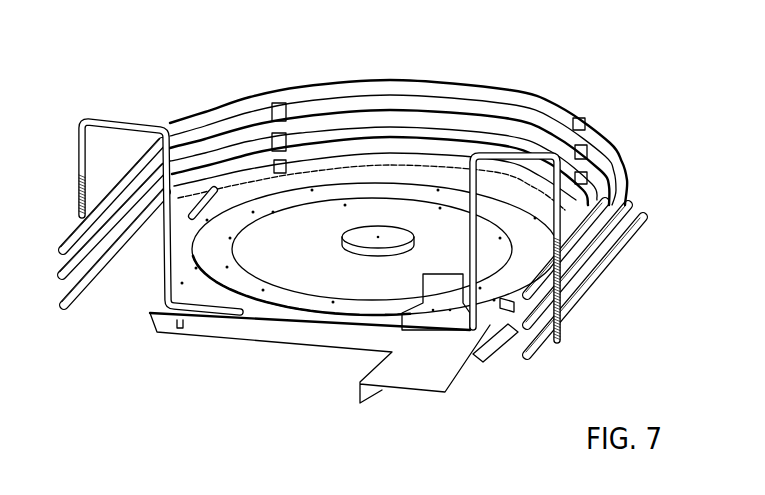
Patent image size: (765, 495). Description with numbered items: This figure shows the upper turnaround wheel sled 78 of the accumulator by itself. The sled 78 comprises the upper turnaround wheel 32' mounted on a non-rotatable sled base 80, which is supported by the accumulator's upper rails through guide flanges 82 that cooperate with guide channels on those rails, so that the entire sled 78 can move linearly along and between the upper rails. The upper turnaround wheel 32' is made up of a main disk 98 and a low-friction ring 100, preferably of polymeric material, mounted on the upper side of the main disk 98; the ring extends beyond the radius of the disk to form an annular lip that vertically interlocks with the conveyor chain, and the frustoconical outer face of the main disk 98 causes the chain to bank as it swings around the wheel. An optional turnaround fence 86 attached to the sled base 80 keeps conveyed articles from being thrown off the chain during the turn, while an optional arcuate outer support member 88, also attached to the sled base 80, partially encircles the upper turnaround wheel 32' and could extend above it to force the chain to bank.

The upper turnaround wheel sled 78 is at (570, 53).
The sled base 80 is at (212, 328).
The guide flanges 82 is at (522, 318).
The turnaround fence 86 is at (388, 90).
The arcuate outer support member 88 is at (233, 183).
The main disk 98 is at (363, 283).
The low-friction ring 100 is at (400, 193).
The upper turnaround wheel 32' is at (369, 292).